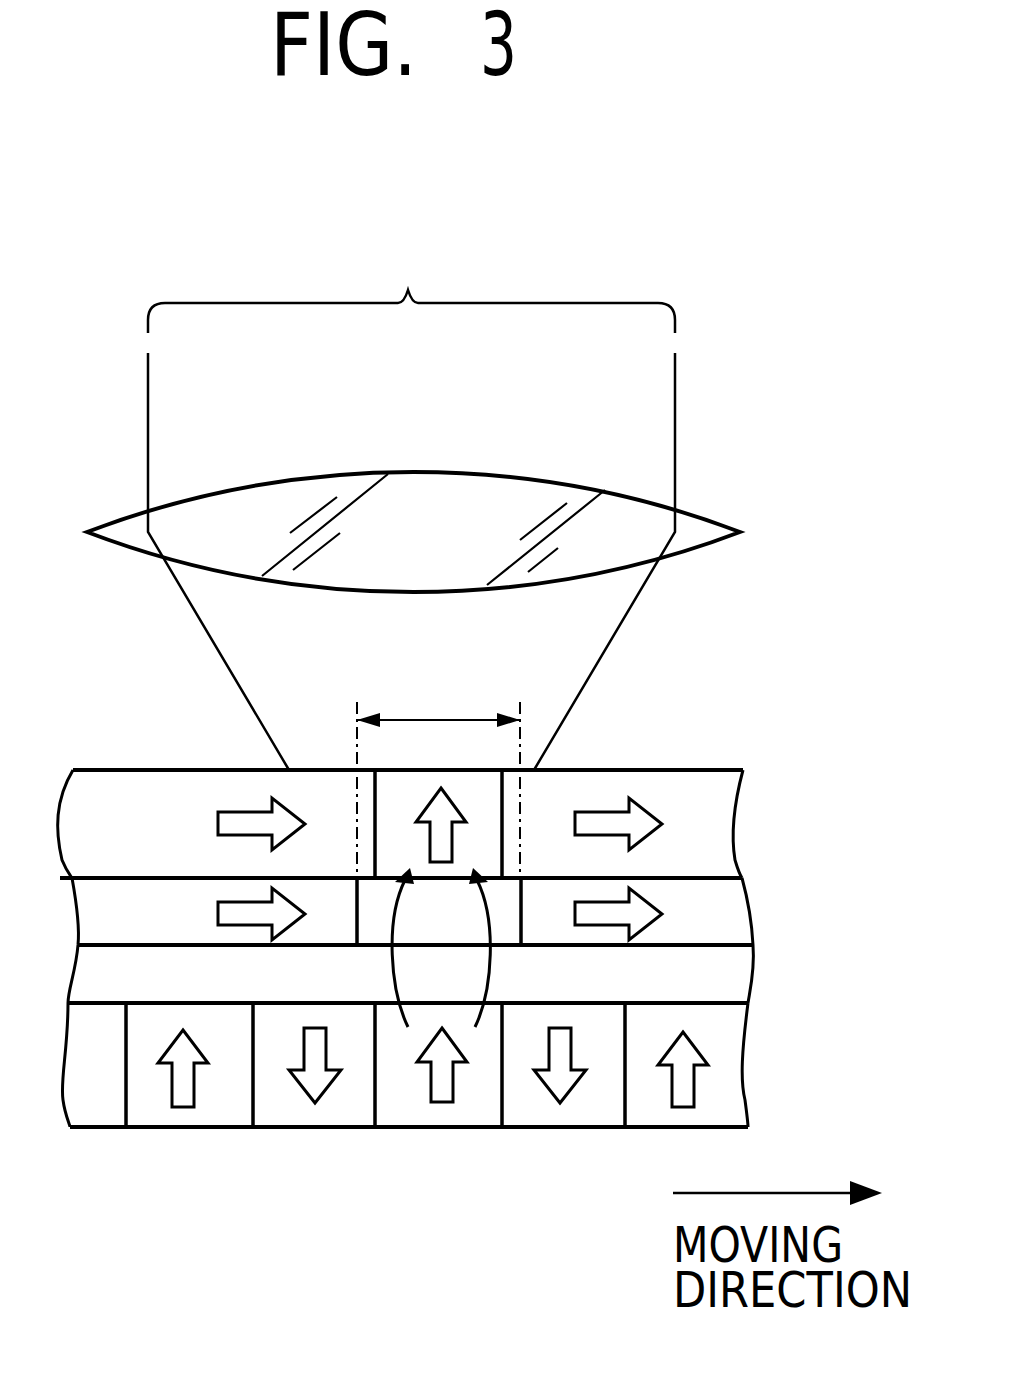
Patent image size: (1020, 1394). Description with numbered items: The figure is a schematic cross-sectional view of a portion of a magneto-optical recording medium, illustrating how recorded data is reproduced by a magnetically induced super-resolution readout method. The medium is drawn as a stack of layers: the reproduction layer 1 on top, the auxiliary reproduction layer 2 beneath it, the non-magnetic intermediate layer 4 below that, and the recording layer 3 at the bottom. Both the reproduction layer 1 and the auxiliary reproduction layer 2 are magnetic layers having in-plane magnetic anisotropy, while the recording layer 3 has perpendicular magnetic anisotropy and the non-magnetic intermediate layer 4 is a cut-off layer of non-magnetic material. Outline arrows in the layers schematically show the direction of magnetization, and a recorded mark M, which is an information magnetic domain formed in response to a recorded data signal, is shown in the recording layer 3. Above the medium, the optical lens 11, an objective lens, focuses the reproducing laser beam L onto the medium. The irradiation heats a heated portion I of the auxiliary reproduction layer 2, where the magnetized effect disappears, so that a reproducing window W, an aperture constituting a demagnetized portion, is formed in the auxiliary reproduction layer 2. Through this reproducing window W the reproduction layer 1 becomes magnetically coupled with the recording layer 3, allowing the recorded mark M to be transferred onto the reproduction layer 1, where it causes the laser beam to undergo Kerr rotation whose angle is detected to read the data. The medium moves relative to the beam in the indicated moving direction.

The reproduction layer 1 is at (698, 825).
The auxiliary reproduction layer 2 is at (698, 902).
The recording layer 3 is at (698, 1080).
The non-magnetic intermediate layer 4 is at (698, 965).
The optical lens 11 is at (700, 510).
The reproducing laser beam L is at (411, 496).
The heated portion I is at (438, 769).
The reproducing window W is at (358, 902).
The recorded mark M is at (482, 1098).